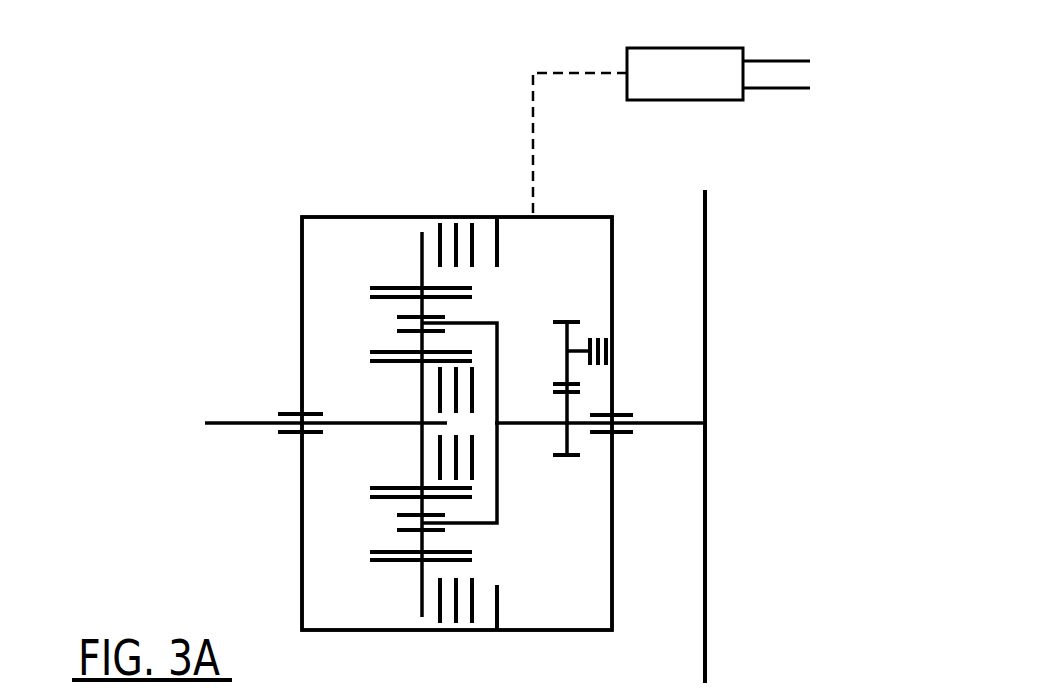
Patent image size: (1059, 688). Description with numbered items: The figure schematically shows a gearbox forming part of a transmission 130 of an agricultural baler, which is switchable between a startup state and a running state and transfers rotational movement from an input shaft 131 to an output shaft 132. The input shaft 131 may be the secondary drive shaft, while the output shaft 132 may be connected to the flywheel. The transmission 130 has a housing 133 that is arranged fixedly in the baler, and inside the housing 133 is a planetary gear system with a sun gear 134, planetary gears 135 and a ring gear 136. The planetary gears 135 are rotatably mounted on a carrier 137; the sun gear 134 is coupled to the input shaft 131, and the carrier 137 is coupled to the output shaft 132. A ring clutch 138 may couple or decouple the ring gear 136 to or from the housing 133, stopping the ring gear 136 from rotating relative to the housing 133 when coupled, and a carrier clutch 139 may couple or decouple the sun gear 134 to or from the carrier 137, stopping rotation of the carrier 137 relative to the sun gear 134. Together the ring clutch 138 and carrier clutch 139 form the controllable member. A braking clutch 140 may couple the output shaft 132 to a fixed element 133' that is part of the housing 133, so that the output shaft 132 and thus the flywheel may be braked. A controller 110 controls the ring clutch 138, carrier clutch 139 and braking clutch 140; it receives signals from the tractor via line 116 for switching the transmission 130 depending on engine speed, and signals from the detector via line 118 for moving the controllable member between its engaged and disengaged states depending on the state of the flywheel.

The controller 110 is at (728, 88).
The line 116 is at (785, 88).
The line 118 is at (774, 60).
The transmission 130 is at (175, 200).
The input shaft 131 is at (250, 428).
The output shaft 132 is at (672, 425).
The housing 133 is at (447, 359).
The fixed element 133' is at (658, 436).
The sun gear 134 is at (420, 382).
The planetary gears 135 is at (420, 313).
The ring gear 136 is at (420, 252).
The carrier 137 is at (497, 330).
The ring clutch 138 is at (450, 241).
The carrier clutch 139 is at (468, 455).
The braking clutch 140 is at (600, 336).